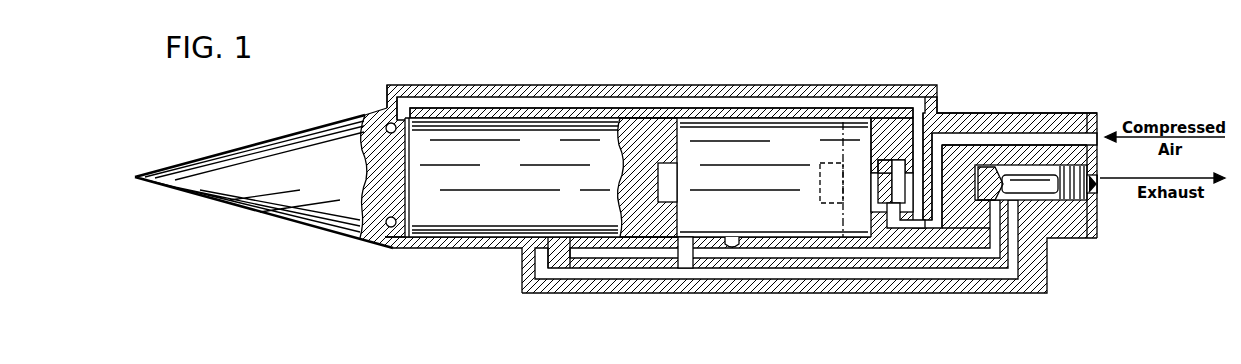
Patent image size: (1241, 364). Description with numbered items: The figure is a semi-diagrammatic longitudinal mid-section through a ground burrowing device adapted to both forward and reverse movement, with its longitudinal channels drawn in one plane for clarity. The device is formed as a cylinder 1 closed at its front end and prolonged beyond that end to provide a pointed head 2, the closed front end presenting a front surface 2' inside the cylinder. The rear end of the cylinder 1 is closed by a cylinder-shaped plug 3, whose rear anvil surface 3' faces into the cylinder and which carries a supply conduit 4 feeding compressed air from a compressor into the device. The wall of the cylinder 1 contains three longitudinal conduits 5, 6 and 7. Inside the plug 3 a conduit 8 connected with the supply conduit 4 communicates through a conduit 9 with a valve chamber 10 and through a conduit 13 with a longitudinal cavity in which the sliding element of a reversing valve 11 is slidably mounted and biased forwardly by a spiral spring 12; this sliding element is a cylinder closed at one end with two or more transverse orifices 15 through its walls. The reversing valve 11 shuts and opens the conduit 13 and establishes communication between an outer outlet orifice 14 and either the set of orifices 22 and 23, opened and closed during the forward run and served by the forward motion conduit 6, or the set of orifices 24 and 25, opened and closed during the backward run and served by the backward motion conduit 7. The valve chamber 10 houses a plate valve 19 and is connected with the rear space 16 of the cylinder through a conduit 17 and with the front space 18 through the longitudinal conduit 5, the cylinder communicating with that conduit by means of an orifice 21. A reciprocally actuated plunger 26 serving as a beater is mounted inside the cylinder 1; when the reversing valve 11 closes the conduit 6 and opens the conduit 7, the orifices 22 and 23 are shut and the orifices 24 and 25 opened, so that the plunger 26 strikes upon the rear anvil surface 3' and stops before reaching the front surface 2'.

The cylinder 1 is at (558, 110).
The pointed head 2 is at (264, 182).
The front surface 2' is at (359, 142).
The plug 3 is at (1014, 155).
The rear anvil surface 3' is at (831, 172).
The supply conduit 4 is at (1090, 126).
The longitudinal conduit 5 is at (696, 96).
The longitudinal forward motion conduit 6 is at (708, 279).
The longitudinal backward motion conduit 7 is at (775, 258).
The conduit 8 is at (967, 128).
The conduit 9 is at (925, 228).
The valve chamber 10 is at (938, 106).
The reversing valve 11 is at (1010, 178).
The spiral spring 12 is at (1096, 182).
The conduit 13 is at (955, 198).
The outer outlet orifice 14 is at (1097, 192).
The orifices 15 is at (1060, 168).
The rear space 16 is at (757, 188).
The conduit 17 is at (873, 155).
The front space 18 is at (370, 128).
The plate valve 19 is at (876, 190).
The orifice 21 is at (405, 110).
The orifice 22 is at (533, 255).
The orifice 23 is at (688, 240).
The orifice 24 is at (560, 275).
The orifice 25 is at (738, 242).
The plunger 26 is at (481, 180).